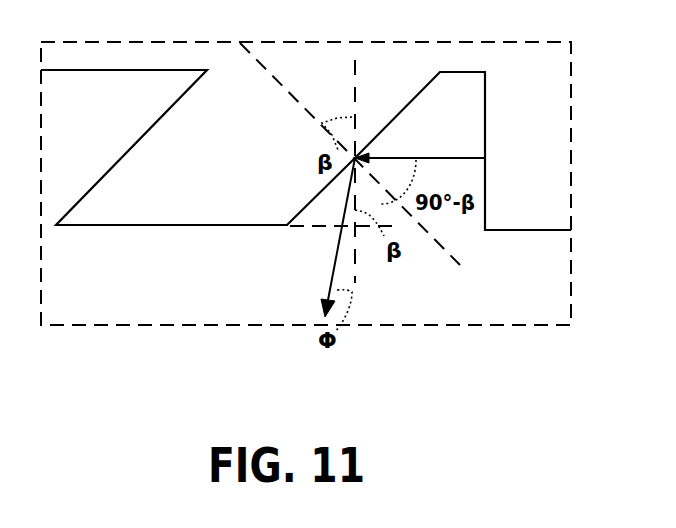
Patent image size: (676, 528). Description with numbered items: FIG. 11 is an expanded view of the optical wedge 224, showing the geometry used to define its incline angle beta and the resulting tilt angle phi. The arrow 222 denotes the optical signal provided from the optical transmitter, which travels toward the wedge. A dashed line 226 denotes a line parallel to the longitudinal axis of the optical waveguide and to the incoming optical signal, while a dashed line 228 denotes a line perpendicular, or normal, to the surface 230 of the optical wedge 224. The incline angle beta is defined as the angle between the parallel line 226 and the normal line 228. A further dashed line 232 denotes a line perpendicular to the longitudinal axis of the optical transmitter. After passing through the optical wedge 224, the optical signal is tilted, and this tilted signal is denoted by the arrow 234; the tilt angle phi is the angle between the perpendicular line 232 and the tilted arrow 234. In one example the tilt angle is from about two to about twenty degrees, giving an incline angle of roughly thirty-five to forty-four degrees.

The arrow 222 is at (395, 158).
The optical wedge 224 is at (365, 41).
The dashed line 226 is at (328, 228).
The dashed line 228 is at (277, 103).
The surface 230 is at (390, 120).
The dashed line 232 is at (352, 98).
The arrow 234 is at (332, 275).